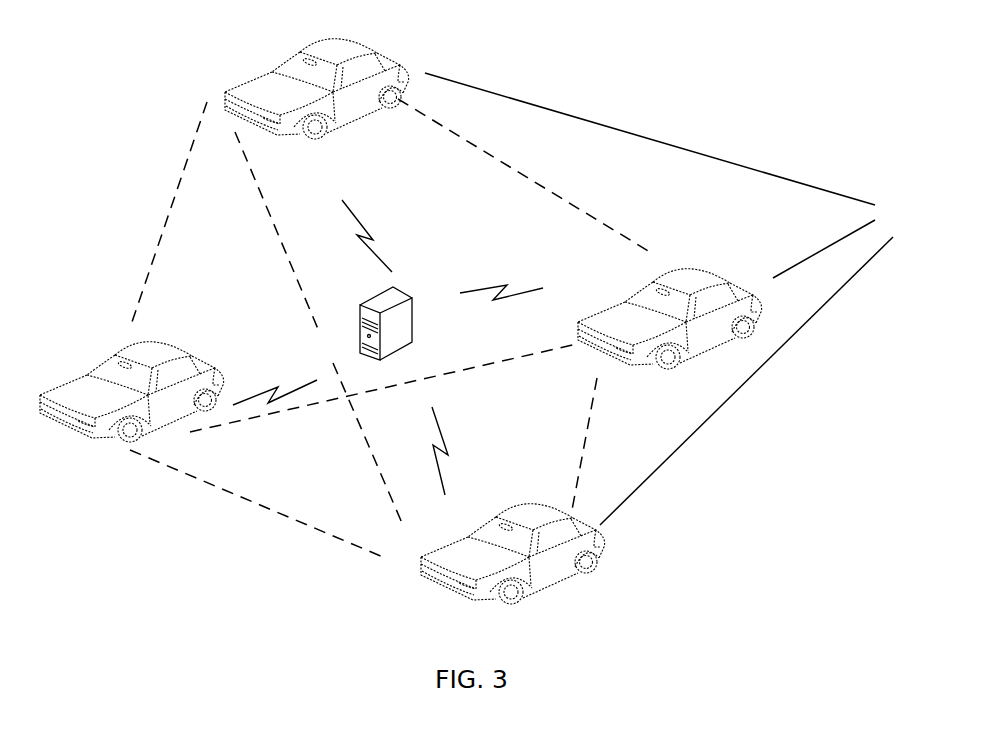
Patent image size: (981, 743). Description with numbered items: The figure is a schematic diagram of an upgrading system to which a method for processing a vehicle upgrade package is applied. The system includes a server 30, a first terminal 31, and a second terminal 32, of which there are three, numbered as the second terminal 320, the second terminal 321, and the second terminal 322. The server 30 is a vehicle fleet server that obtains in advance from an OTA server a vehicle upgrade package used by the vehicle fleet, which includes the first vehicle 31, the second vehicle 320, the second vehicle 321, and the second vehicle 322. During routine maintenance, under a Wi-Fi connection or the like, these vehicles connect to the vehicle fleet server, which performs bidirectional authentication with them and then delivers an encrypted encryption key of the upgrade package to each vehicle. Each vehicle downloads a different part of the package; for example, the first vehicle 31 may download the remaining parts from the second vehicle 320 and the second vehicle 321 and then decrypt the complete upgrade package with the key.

The server 30 is at (412, 315).
The first terminal 31 is at (120, 352).
The second terminal 32 is at (669, 299).
The second terminal 320 is at (323, 38).
The second terminal 321 is at (675, 271).
The second terminal 322 is at (512, 509).